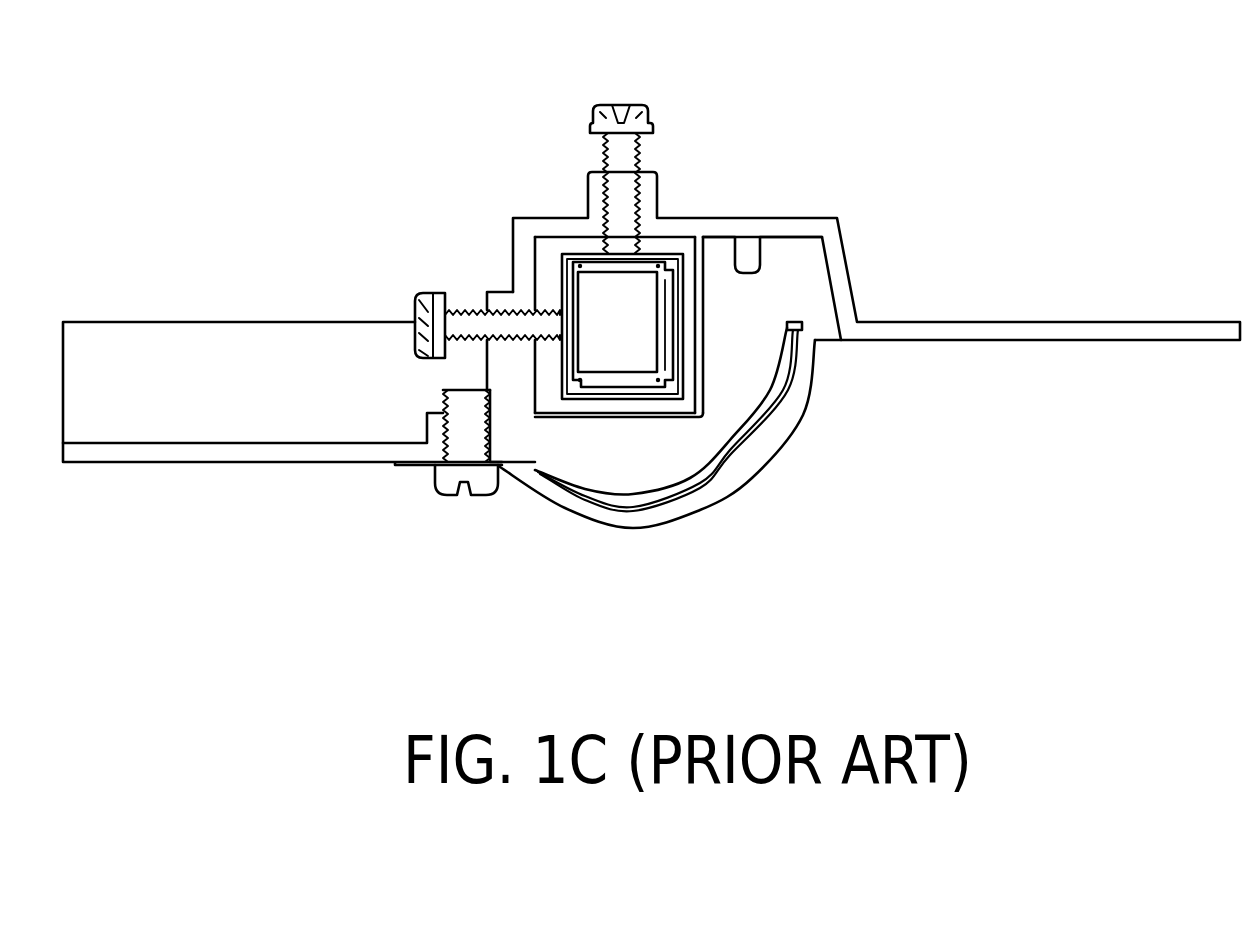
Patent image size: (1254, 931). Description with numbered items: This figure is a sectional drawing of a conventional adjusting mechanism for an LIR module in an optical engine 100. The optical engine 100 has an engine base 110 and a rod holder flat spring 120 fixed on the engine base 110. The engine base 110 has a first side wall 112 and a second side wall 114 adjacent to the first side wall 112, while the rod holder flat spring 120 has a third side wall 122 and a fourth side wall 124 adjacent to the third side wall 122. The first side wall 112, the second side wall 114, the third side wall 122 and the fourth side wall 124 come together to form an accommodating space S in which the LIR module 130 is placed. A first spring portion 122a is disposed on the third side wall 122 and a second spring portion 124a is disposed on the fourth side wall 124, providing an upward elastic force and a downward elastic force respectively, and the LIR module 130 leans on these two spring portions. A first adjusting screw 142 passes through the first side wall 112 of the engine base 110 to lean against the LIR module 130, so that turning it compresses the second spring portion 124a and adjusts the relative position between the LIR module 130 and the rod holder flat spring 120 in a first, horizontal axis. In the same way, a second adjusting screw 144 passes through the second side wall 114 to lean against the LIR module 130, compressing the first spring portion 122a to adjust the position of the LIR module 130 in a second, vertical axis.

The optical engine 100 is at (1242, 673).
The engine base 110 is at (777, 225).
The first side wall 112 is at (498, 376).
The second side wall 114 is at (687, 228).
The rod holder flat spring 120 is at (665, 492).
The third side wall 122 is at (669, 417).
The first spring portion 122a is at (623, 393).
The fourth side wall 124 is at (703, 388).
The second spring portion 124a is at (703, 312).
The LIR module 130 is at (587, 265).
The first adjusting screw 142 is at (435, 303).
The second adjusting screw 144 is at (653, 123).
The accommodating space S is at (553, 247).